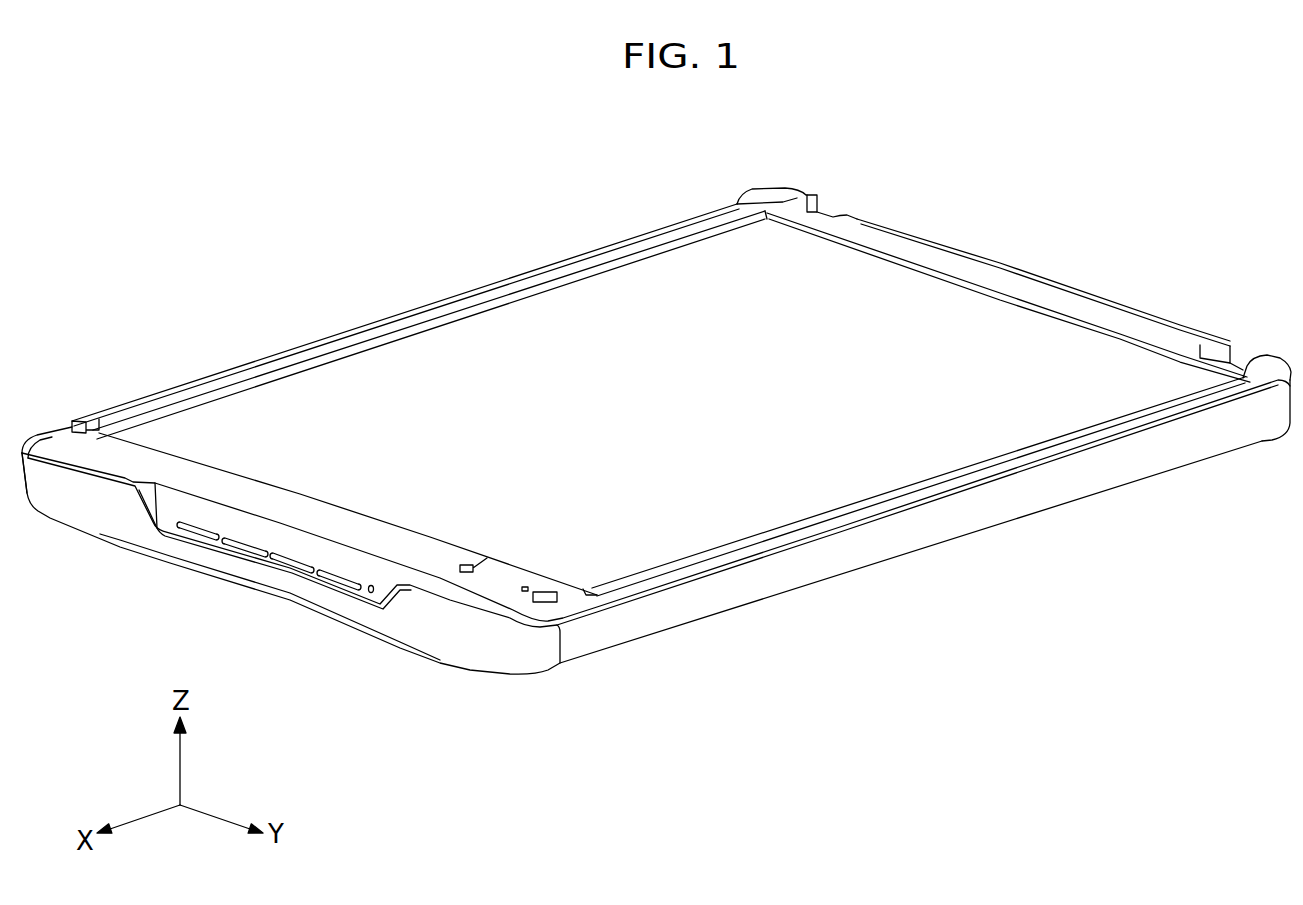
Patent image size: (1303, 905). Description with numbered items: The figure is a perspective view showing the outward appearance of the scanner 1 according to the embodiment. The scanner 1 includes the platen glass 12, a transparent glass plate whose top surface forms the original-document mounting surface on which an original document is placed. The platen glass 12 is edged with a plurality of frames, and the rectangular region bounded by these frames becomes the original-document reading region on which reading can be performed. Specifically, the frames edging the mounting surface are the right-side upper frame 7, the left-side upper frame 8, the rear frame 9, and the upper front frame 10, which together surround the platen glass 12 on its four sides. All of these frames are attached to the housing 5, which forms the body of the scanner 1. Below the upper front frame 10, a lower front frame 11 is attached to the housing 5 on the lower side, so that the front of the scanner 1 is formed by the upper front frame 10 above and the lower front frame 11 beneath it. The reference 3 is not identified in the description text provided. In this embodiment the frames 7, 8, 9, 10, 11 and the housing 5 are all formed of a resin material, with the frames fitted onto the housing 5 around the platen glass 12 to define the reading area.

The scanner 1 is at (323, 291).
The operation buttons 3 is at (198, 532).
The housing 5 is at (852, 552).
The right-side upper frame 7 is at (987, 472).
The left-side upper frame 8 is at (457, 303).
The rear frame 9 is at (1078, 308).
The upper front frame 10 is at (137, 455).
The lower front frame 11 is at (77, 506).
The platen glass 12 is at (605, 296).